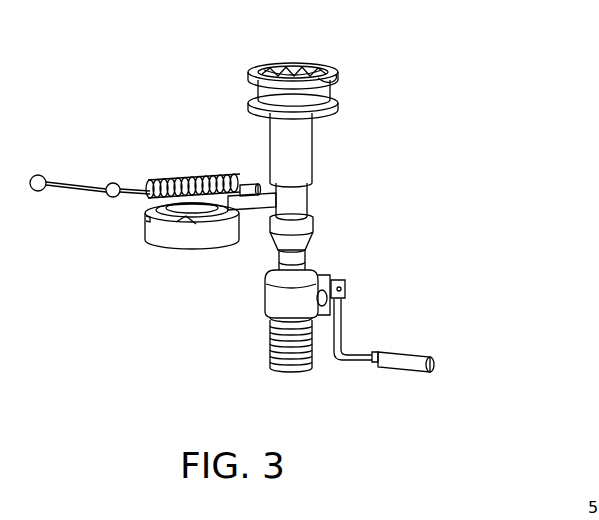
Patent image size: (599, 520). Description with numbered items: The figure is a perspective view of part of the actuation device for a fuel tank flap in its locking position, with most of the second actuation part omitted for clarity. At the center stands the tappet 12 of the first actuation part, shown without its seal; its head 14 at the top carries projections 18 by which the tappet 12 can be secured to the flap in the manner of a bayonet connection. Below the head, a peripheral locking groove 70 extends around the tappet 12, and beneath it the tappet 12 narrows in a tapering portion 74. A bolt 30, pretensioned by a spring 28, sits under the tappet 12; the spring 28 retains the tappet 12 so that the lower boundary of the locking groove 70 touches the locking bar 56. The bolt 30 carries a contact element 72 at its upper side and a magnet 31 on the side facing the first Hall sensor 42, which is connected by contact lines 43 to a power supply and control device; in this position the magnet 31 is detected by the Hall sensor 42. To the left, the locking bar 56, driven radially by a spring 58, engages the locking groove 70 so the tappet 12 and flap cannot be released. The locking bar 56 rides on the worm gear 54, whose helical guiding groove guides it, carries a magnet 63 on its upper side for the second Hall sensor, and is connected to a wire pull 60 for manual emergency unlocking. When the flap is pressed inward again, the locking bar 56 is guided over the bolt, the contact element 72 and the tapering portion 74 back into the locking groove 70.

The tappet 12 is at (300, 150).
The head 14 is at (292, 62).
The projections 18 is at (328, 82).
The spring 28 is at (290, 364).
The bolt 30 is at (272, 300).
The magnet 31 is at (326, 302).
The first Hall sensor 42 is at (346, 286).
The contact lines 43 is at (405, 370).
The worm gear 54 is at (177, 244).
The locking bar 56 is at (262, 212).
The spring 58 is at (200, 176).
The wire pull 60 is at (72, 194).
The magnet 63 is at (240, 185).
The locking groove 70 is at (300, 205).
The contact element 72 is at (308, 262).
The tapering portion 74 is at (305, 244).